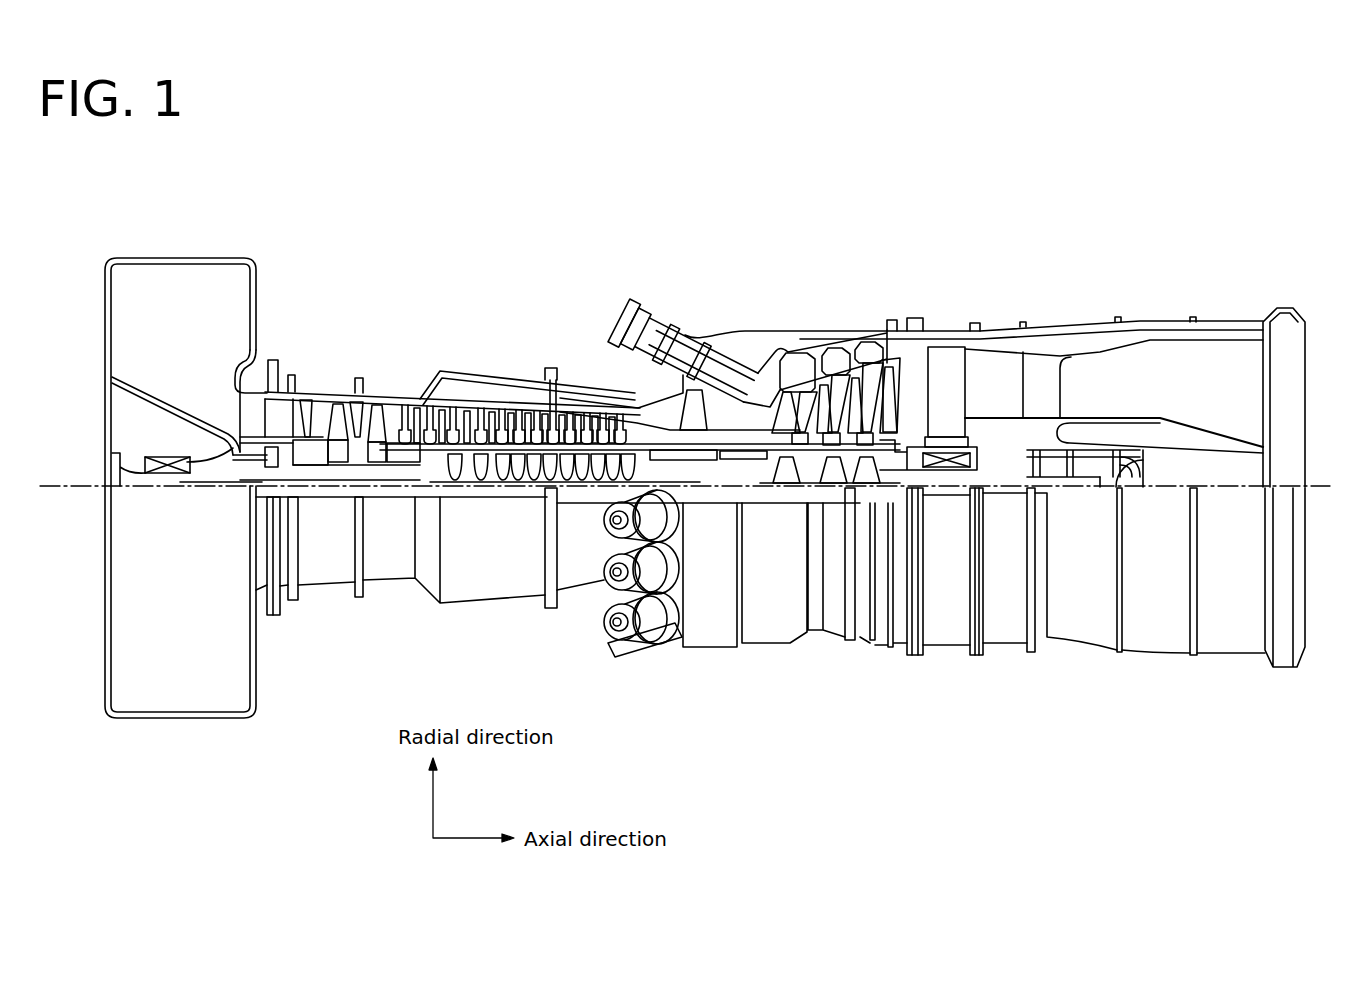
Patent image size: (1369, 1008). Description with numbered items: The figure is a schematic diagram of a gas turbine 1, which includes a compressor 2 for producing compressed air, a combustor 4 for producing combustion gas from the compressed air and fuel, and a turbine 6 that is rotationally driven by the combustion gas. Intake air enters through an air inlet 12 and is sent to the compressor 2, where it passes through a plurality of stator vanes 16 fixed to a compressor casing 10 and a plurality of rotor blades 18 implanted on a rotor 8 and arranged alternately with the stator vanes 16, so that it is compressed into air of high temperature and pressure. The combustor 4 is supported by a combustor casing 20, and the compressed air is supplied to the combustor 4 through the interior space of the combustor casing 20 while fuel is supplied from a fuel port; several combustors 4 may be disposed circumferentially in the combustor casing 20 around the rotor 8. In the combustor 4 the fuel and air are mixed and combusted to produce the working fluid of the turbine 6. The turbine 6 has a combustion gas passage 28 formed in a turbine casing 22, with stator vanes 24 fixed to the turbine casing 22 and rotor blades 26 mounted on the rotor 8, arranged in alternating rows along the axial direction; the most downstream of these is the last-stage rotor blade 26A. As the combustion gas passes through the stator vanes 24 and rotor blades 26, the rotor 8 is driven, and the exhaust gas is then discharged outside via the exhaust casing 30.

The gas turbine 1 is at (721, 212).
The compressor 2 is at (487, 358).
The combustor 4 is at (642, 302).
The turbine 6 is at (844, 316).
The rotor 8 is at (672, 446).
The compressor casing 10 is at (321, 397).
The air inlet 12 is at (140, 346).
The stator vanes 16 is at (338, 406).
The rotor blades 18 is at (318, 404).
The combustor casing 20 is at (612, 338).
The turbine casing 22 is at (853, 334).
The stator vanes 24 is at (799, 356).
The rotor blades 26 is at (779, 366).
The last-stage rotor blade 26A is at (888, 390).
The combustion gas passage 28 is at (884, 342).
The exhaust casing 30 is at (963, 316).